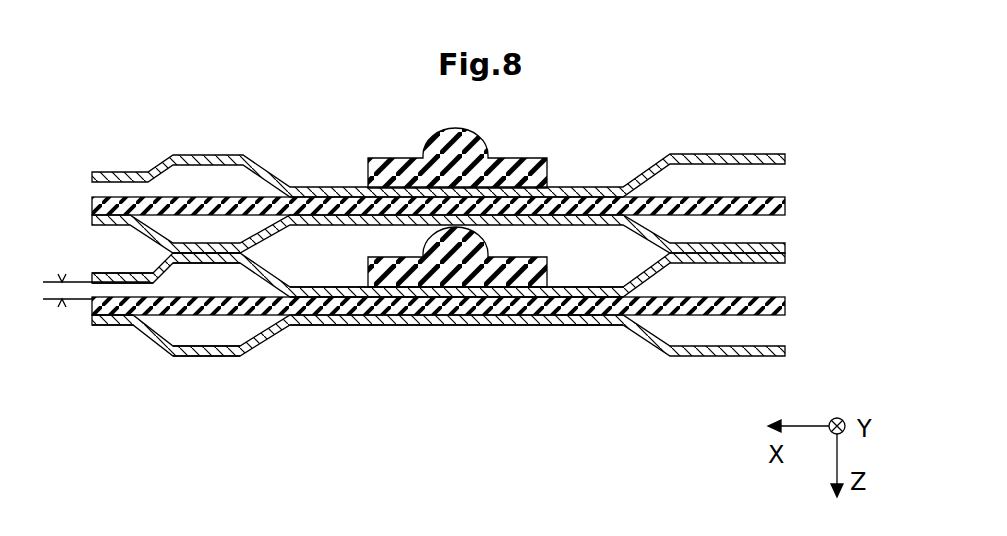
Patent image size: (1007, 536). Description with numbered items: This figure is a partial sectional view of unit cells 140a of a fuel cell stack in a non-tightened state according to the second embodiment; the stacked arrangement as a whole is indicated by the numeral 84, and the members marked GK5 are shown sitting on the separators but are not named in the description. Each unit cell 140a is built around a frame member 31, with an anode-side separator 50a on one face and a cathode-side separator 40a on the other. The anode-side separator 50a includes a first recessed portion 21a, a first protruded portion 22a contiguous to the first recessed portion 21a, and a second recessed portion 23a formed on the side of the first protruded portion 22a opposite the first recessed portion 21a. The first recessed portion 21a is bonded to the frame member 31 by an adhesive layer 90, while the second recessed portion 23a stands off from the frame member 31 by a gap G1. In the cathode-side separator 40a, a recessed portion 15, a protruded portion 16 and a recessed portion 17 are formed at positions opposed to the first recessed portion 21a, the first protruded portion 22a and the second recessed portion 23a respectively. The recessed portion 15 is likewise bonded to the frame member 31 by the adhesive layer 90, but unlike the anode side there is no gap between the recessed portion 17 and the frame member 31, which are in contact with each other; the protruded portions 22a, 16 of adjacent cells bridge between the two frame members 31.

The stacked body 84 is at (68, 184).
The unit cells 140a is at (838, 125).
The anode-side separator 50a is at (757, 154).
The frame member 31 is at (757, 197).
The cathode-side separator 40a is at (757, 244).
The second recessed portion 23a is at (98, 271).
The first protruded portion 22a is at (187, 266).
The first recessed portion 21a is at (340, 287).
The recessed portion 17 is at (117, 326).
The protruded portion 16 is at (207, 357).
The recessed portion 15 is at (345, 326).
The adhesive layer 90 is at (590, 318).
The fixing member GK5 is at (528, 156).
The gap G1 is at (62, 262).